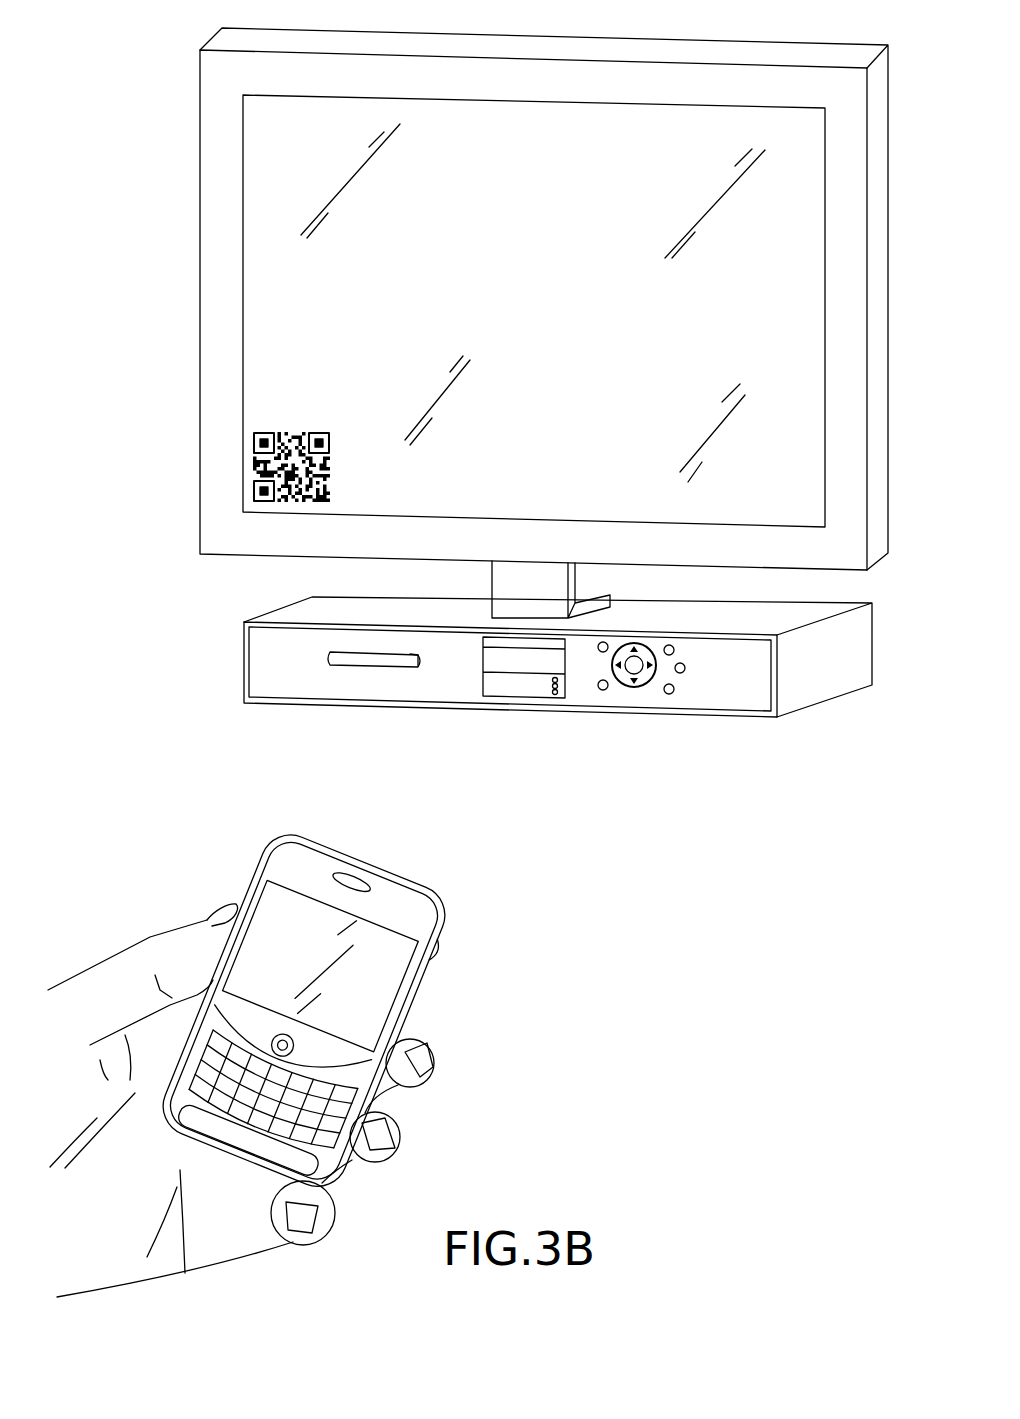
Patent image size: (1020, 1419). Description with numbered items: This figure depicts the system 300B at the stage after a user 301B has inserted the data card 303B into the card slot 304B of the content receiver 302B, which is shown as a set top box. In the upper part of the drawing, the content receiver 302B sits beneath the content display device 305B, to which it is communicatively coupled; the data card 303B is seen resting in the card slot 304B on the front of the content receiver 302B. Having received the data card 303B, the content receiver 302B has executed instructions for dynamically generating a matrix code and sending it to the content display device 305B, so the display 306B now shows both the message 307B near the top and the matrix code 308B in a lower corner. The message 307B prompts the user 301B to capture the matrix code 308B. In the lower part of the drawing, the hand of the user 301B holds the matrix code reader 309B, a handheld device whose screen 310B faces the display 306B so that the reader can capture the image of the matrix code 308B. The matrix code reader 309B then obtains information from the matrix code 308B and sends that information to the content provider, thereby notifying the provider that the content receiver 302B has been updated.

The system 300B is at (708, 1043).
The user 301B is at (82, 973).
The content receiver 302B is at (268, 612).
The data card 303B is at (409, 655).
The card slot 304B is at (328, 652).
The content display device 305B is at (200, 100).
The display 306B is at (262, 214).
The message 307B is at (612, 127).
The matrix code 308B is at (253, 456).
The matrix code reader 309B is at (266, 852).
The mobile device screen 310B is at (398, 960).